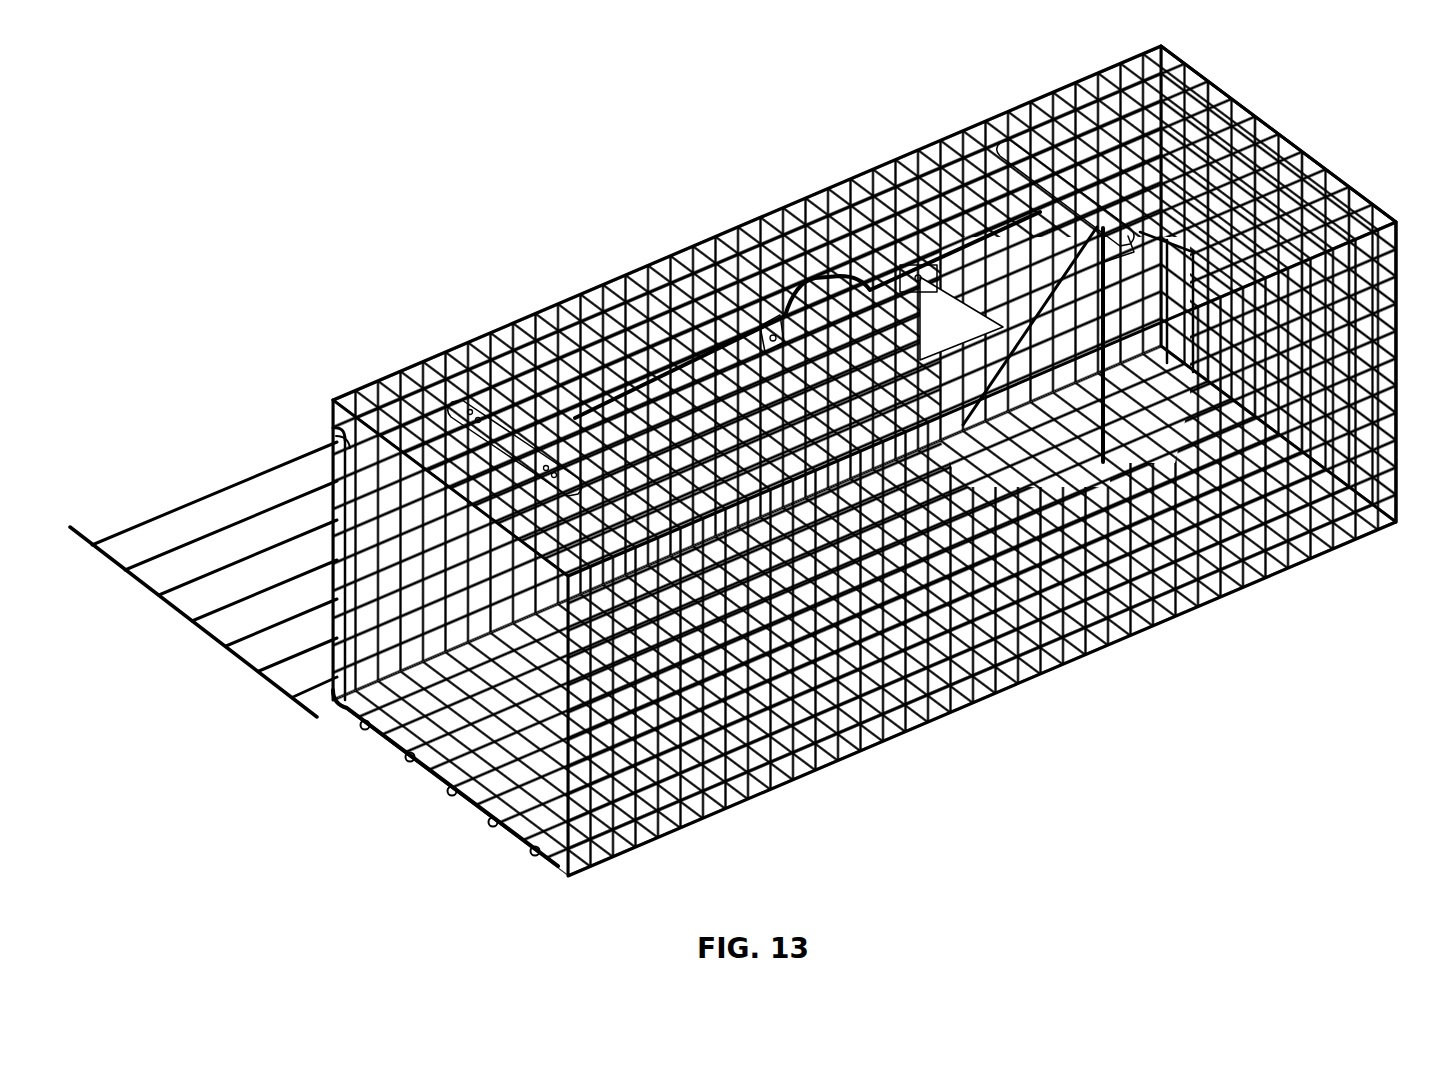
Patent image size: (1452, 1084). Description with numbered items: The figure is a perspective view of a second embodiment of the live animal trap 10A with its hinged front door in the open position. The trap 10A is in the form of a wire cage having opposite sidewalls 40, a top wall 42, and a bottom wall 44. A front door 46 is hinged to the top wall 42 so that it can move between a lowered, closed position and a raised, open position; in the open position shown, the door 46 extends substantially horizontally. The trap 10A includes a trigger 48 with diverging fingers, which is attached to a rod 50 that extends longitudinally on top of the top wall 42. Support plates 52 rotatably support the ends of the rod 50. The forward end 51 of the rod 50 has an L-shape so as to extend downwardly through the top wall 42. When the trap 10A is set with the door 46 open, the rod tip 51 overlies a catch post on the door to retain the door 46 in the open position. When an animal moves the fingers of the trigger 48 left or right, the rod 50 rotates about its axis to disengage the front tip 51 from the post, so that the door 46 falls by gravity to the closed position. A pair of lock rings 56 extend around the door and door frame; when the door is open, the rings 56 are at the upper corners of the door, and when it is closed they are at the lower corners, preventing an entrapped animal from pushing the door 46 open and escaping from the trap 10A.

The animal trap 10A is at (918, 754).
The sidewalls 40 is at (1040, 677).
The top wall 42 is at (665, 258).
The bottom wall 44 is at (500, 824).
The front door 46 is at (218, 490).
The trigger 48 is at (1385, 193).
The rod 50 is at (580, 398).
The forward end 51 is at (410, 396).
The support plates 52 is at (1005, 140).
The lock rings 56 is at (330, 430).